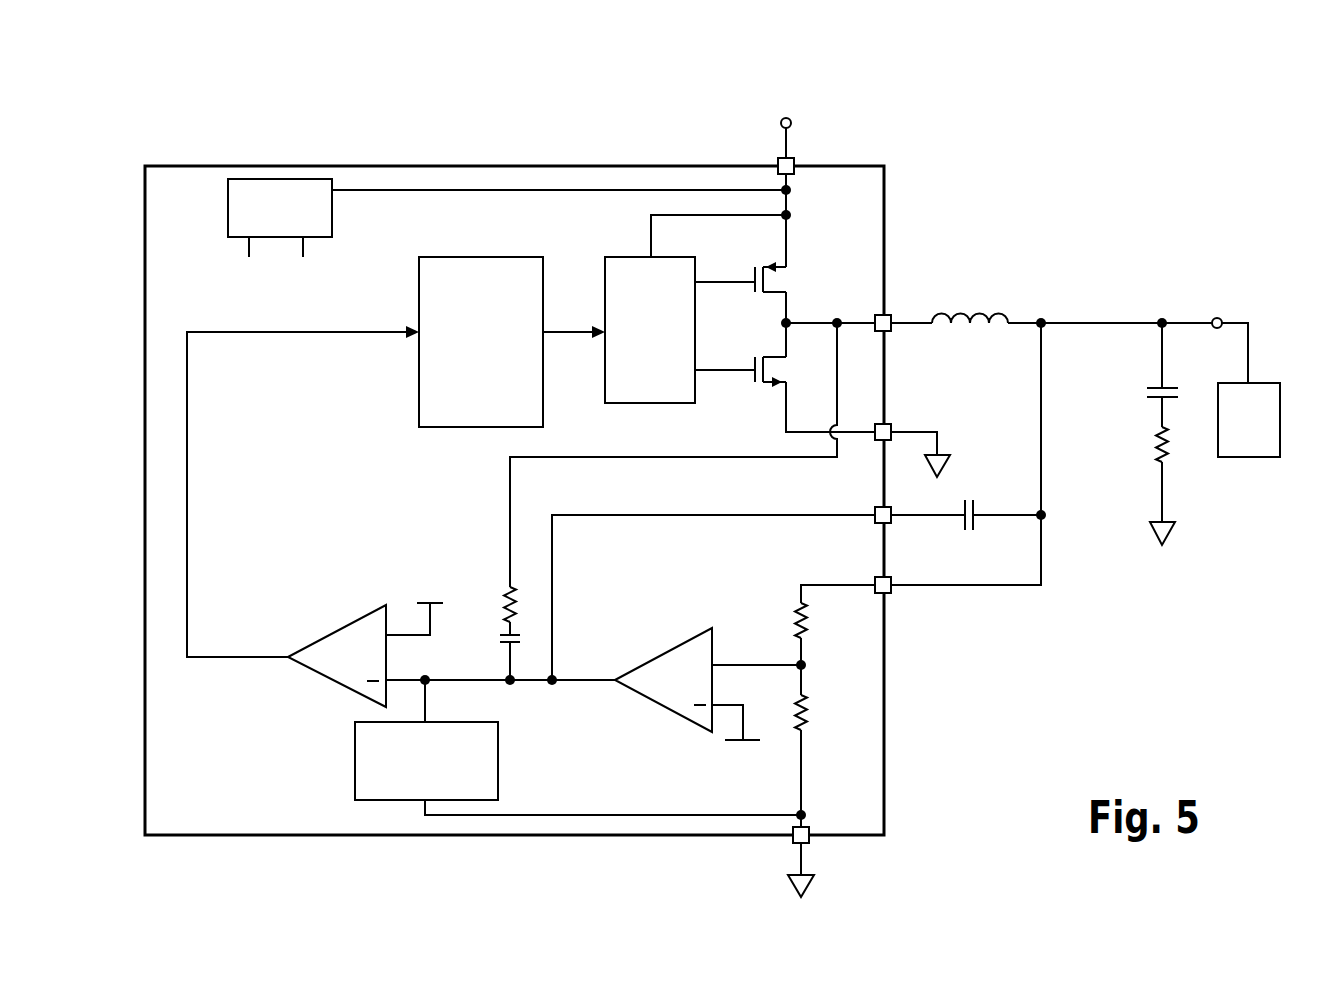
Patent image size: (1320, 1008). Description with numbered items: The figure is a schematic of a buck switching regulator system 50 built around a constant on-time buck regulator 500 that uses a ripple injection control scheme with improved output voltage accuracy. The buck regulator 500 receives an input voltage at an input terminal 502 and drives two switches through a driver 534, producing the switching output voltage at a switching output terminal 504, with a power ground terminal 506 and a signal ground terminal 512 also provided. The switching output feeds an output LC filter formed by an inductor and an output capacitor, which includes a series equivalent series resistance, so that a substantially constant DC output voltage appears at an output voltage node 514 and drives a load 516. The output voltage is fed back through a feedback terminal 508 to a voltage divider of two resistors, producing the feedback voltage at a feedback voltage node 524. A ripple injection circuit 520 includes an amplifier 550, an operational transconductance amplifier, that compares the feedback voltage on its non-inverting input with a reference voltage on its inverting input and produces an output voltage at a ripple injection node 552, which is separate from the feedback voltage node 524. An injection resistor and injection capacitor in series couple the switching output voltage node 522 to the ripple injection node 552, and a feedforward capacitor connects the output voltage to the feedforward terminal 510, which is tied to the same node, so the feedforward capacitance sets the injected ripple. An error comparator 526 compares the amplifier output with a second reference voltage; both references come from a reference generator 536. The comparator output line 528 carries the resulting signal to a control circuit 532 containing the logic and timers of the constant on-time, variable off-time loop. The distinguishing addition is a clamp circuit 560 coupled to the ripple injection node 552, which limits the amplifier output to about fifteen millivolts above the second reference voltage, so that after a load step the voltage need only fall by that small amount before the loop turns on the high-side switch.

The buck switching regulator system 50 is at (1026, 99).
The buck regulator 500 is at (343, 165).
The input voltage pad VIN 502 is at (795, 159).
The switching output terminal 504 is at (891, 332).
The power ground pad PGND 506 is at (891, 441).
The feedback terminal 508 is at (892, 593).
The feedforward terminal 510 is at (891, 523).
The signal ground pad SGND 512 is at (793, 841).
The output voltage node 514 is at (1091, 322).
The load 516 is at (1232, 457).
The ripple injection circuit 520 is at (476, 566).
The switching output voltage node 522 is at (840, 331).
The feedback voltage node 524 is at (808, 665).
The error comparator 526 is at (310, 668).
The comparator output line 528 is at (216, 656).
The control circuit 532 is at (465, 415).
The driver 534 is at (634, 383).
The reference generator 536 is at (228, 210).
The amplifier 550 is at (648, 704).
The ripple injection node 552 is at (556, 686).
The clamp circuit 560 is at (355, 750).